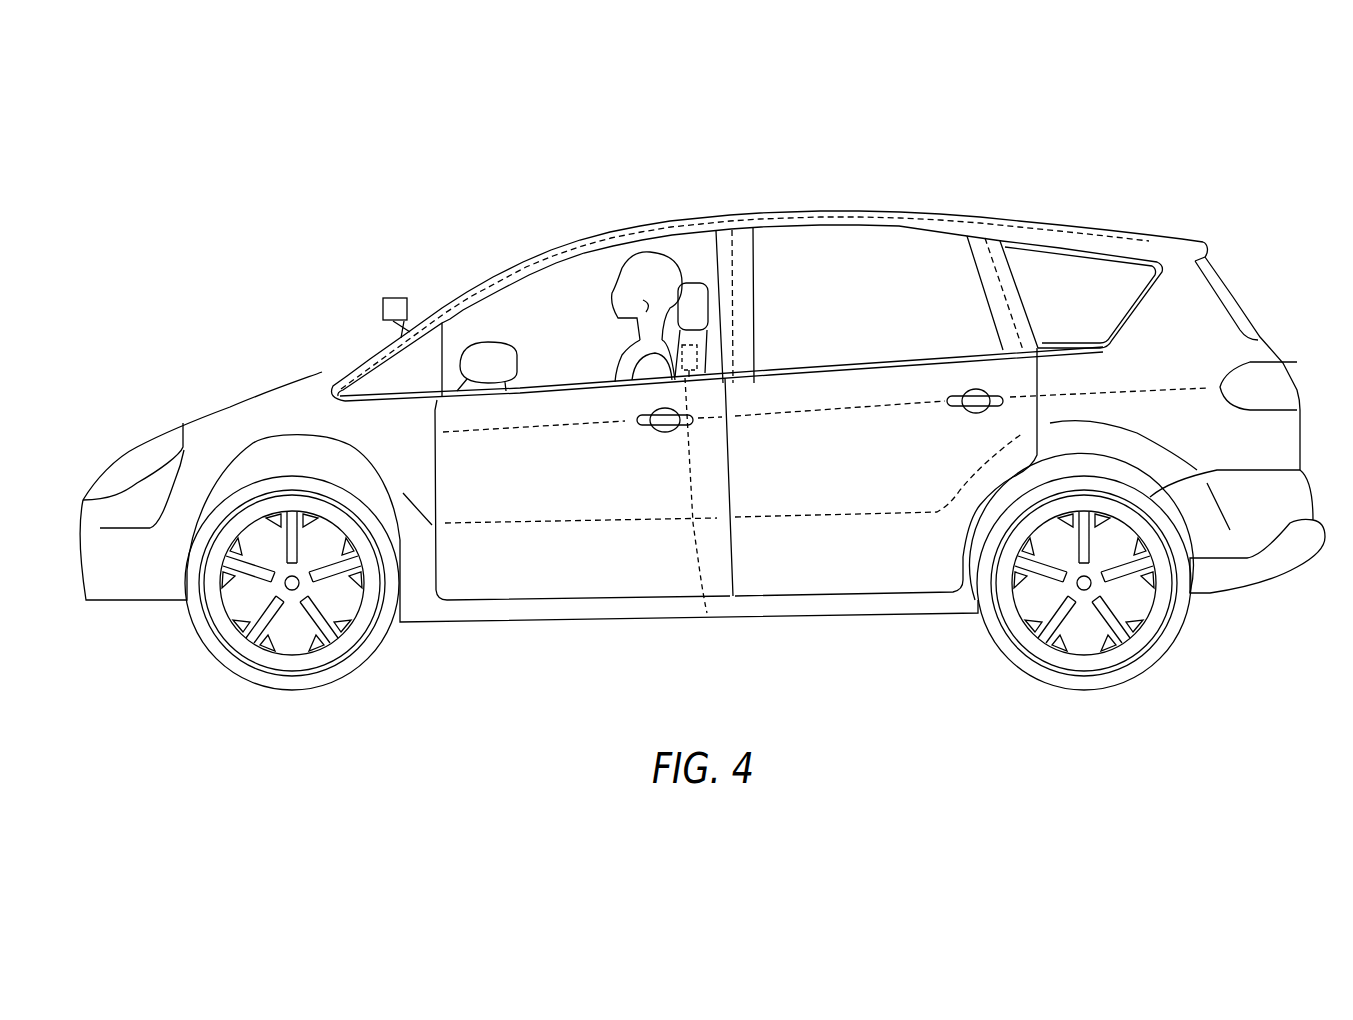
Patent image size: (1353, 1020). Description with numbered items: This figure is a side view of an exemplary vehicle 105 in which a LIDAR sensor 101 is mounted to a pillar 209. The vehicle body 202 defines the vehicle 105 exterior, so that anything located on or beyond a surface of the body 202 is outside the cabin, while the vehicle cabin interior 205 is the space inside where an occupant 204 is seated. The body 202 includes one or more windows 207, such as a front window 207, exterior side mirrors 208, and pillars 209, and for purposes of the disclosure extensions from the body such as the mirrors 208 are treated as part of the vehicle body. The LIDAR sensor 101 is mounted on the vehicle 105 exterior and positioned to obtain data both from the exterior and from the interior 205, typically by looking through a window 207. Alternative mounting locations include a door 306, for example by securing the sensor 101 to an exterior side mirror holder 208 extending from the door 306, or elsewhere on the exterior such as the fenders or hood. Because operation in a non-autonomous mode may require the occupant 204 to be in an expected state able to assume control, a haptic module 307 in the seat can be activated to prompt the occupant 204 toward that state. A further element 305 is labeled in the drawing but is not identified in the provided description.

The vehicle 105 is at (233, 165).
The LIDAR sensor 101 is at (392, 296).
The vehicle body 202 is at (1192, 238).
The occupant 204 is at (603, 235).
The vehicle cabin interior 205 is at (856, 296).
The window 207 is at (505, 320).
The exterior side mirror 208 is at (390, 345).
The pillar 209 is at (523, 272).
The seat headrest 305 is at (687, 282).
The door 306 is at (515, 557).
The haptic module 307 is at (707, 613).